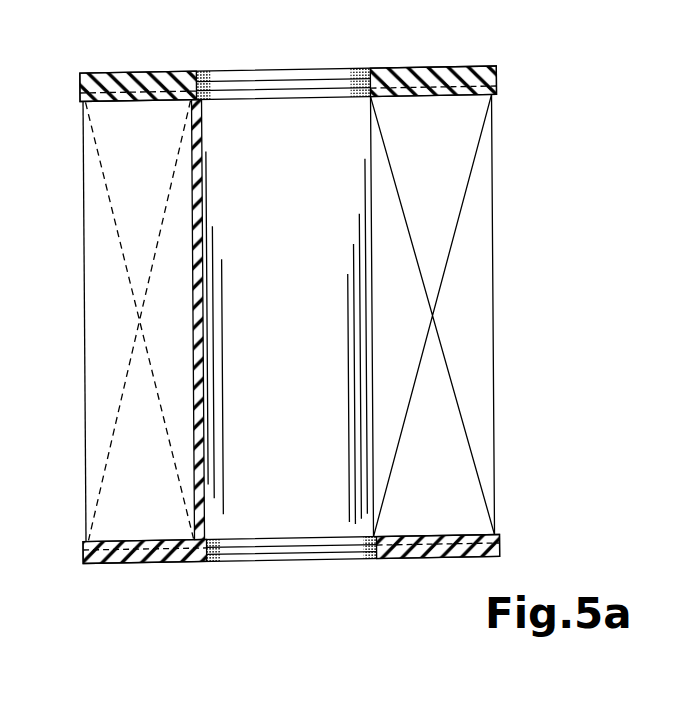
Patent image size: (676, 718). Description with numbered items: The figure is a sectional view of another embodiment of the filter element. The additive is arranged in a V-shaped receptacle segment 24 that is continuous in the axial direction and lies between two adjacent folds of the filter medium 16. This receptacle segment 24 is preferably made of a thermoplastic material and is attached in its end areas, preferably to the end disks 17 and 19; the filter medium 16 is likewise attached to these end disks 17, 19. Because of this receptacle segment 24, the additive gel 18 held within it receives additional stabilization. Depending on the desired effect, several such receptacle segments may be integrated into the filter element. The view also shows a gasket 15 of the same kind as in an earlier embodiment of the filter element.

The gasket 15 is at (206, 69).
The filter medium 16 is at (458, 332).
The end disk 17 is at (472, 69).
The additive gel 18 is at (110, 296).
The end disk 19 is at (391, 549).
The V-shaped receptacle segment 24 is at (203, 128).